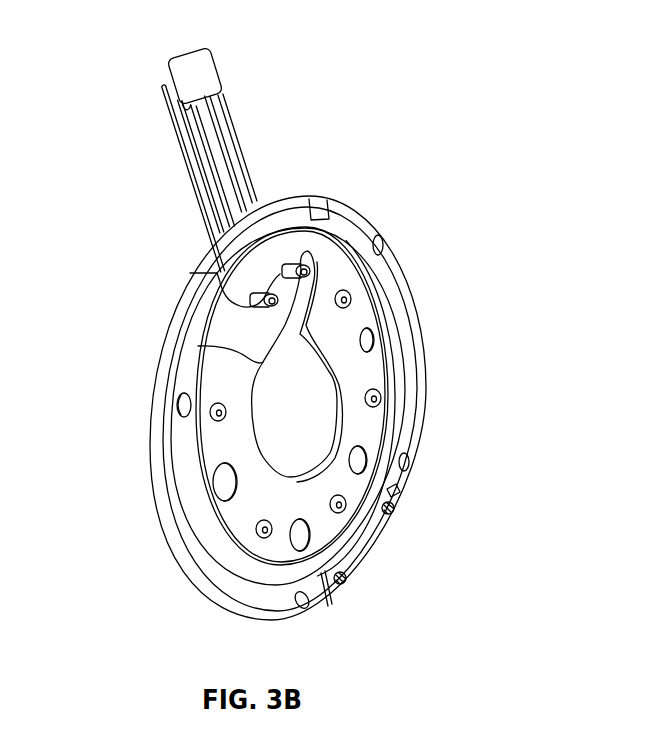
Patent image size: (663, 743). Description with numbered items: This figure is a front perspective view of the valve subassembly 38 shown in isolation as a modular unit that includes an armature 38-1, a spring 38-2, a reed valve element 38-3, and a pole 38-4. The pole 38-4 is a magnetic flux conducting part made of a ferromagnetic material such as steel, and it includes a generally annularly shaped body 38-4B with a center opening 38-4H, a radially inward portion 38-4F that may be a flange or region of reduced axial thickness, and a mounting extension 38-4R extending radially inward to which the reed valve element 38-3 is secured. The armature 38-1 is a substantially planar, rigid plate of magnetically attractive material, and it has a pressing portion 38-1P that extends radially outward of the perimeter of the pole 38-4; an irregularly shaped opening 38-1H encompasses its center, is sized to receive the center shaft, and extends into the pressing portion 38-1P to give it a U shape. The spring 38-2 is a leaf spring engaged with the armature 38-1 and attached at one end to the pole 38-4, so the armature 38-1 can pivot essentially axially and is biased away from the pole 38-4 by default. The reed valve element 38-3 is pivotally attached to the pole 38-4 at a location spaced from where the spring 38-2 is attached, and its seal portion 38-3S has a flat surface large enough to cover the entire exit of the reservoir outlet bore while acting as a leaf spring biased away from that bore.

The valve subassembly 38 is at (303, 97).
The armature 38-1 is at (330, 452).
The opening 38-1H is at (249, 398).
The pressing portion 38-1P is at (166, 96).
The spring 38-2 is at (372, 368).
The reed valve element 38-3 is at (214, 136).
The seal portion 38-3S is at (188, 64).
The pole 38-4 is at (417, 333).
The body 38-4B is at (183, 449).
The radially inward portion 38-4F is at (262, 591).
The center opening 38-4H is at (344, 297).
The mounting extension 38-4R is at (296, 274).